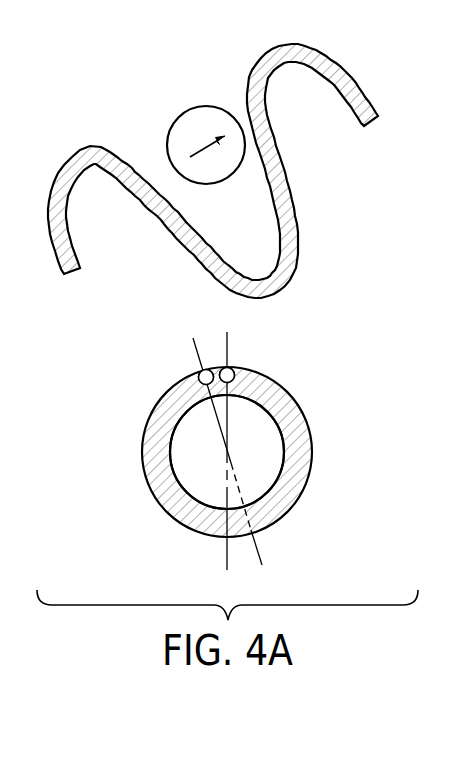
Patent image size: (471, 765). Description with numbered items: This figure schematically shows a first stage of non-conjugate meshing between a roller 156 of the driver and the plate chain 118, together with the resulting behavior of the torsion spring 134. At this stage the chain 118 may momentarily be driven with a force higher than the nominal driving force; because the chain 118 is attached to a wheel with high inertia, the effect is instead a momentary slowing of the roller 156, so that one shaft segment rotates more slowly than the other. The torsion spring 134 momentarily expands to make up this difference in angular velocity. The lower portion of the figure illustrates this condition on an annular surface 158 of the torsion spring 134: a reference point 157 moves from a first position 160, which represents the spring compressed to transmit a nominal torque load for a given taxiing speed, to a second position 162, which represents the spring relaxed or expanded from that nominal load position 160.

The chain 118 is at (297, 211).
The roller 156 is at (196, 106).
The annular surface 158 is at (313, 443).
The torsion spring 134 is at (142, 452).
The reference point 157 is at (207, 385).
The first position 160 is at (236, 373).
The second position 162 is at (214, 369).